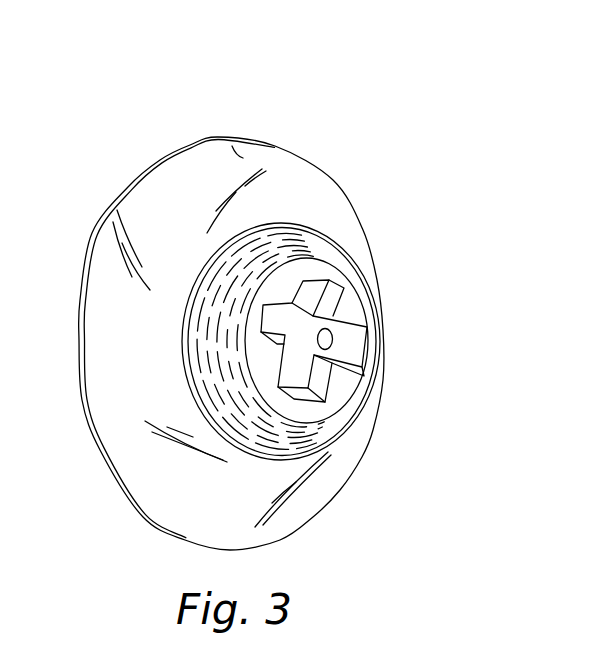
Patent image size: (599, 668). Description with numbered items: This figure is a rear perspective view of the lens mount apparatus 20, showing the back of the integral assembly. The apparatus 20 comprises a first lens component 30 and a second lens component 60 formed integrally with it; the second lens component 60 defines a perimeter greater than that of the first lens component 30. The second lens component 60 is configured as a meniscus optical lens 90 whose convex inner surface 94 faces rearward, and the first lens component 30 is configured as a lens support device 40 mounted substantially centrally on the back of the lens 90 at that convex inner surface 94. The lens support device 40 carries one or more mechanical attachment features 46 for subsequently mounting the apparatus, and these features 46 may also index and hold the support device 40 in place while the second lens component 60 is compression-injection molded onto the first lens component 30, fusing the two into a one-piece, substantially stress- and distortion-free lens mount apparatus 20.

The lens mount apparatus 20 is at (105, 99).
The second lens component 60 is at (71, 150).
The meniscus optical lens 90 is at (214, 106).
The convex inner surface 94 is at (243, 158).
The first lens component 30 is at (384, 216).
The lens support device 40 is at (402, 278).
The mechanical attachment features 46 is at (333, 339).